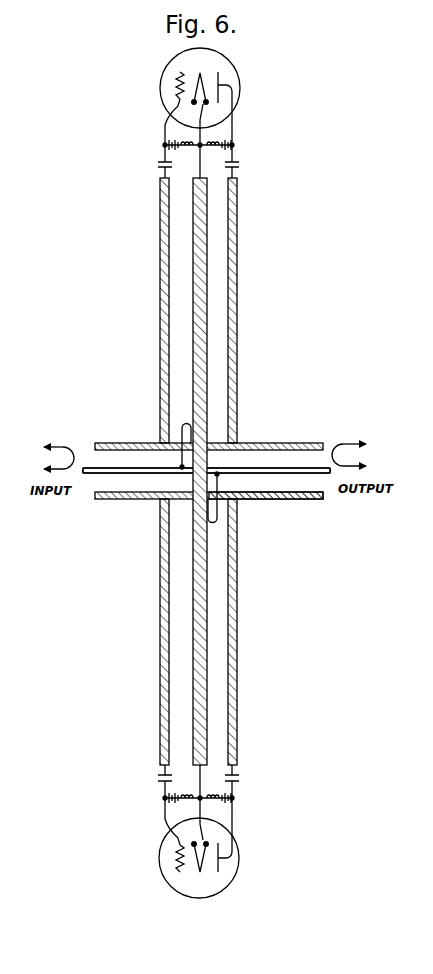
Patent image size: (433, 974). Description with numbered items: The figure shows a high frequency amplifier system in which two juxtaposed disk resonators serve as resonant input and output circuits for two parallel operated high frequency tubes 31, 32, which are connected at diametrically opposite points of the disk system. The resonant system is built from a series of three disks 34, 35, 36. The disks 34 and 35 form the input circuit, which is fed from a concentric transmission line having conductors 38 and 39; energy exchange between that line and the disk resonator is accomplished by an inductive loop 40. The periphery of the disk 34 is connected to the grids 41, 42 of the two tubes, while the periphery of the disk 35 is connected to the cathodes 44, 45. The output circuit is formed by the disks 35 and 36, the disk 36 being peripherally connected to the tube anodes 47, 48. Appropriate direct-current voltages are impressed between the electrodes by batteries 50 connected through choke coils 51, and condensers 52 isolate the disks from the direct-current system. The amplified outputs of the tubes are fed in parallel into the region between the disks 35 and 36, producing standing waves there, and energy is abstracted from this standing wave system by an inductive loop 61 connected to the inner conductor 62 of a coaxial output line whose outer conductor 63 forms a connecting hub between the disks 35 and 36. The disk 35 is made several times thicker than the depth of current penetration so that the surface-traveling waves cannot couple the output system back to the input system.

The tube 31 is at (171, 61).
The tube 32 is at (231, 884).
The disk 34 is at (160, 243).
The disk 35 is at (207, 200).
The disk 36 is at (237, 236).
The conductor 38 is at (127, 444).
The conductor 39 is at (127, 499).
The inductive loop 40 is at (180, 428).
The grid 41 is at (177, 85).
The grid 42 is at (178, 862).
The cathode 44 is at (203, 73).
The cathode 45 is at (200, 873).
The tube anode 47 is at (220, 80).
The tube anode 48 is at (220, 865).
The battery 50 is at (166, 144).
The choke coil 51 is at (165, 128).
The by-pass capacitor 52 is at (157, 165).
The inductive loop 61 is at (222, 519).
The inner conductor 62 is at (253, 467).
The outer conductor 63 is at (285, 499).